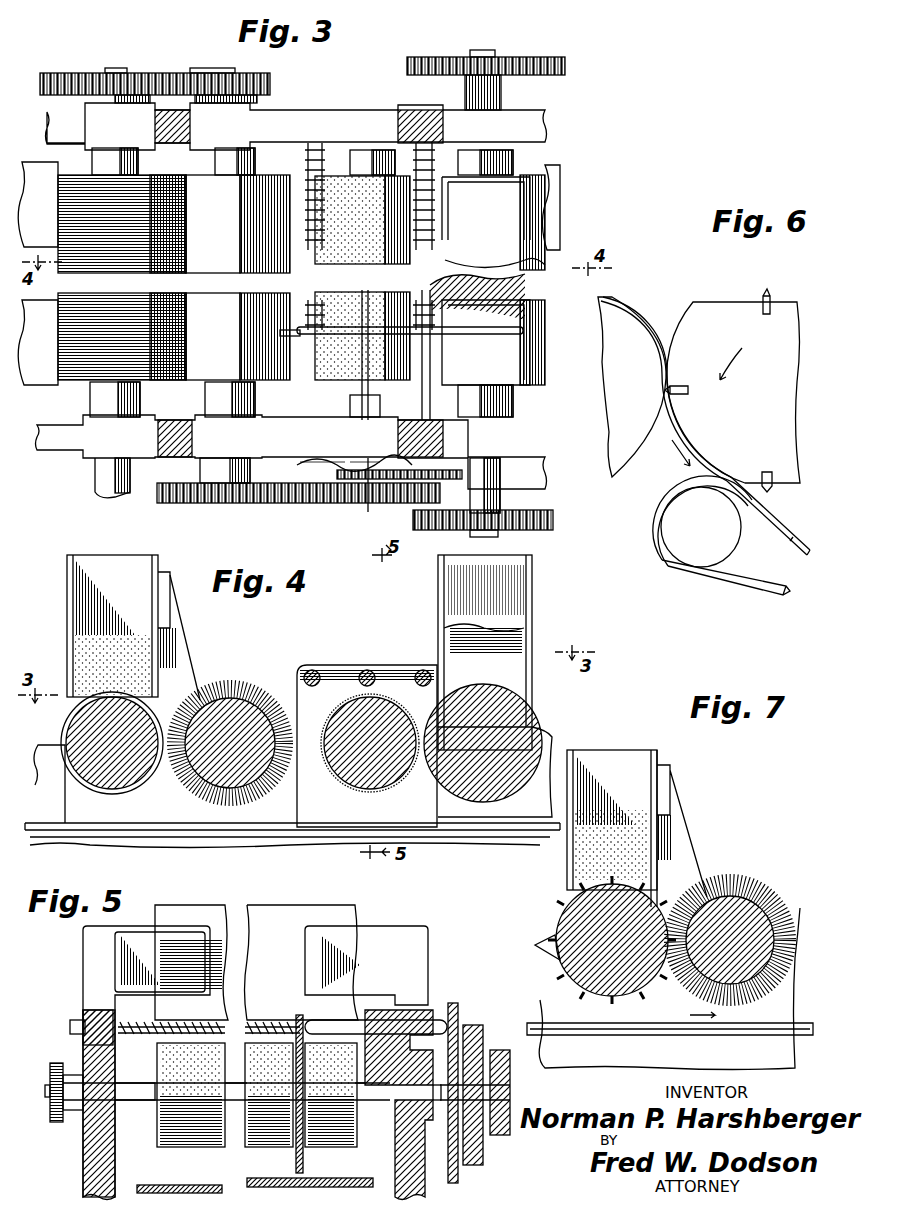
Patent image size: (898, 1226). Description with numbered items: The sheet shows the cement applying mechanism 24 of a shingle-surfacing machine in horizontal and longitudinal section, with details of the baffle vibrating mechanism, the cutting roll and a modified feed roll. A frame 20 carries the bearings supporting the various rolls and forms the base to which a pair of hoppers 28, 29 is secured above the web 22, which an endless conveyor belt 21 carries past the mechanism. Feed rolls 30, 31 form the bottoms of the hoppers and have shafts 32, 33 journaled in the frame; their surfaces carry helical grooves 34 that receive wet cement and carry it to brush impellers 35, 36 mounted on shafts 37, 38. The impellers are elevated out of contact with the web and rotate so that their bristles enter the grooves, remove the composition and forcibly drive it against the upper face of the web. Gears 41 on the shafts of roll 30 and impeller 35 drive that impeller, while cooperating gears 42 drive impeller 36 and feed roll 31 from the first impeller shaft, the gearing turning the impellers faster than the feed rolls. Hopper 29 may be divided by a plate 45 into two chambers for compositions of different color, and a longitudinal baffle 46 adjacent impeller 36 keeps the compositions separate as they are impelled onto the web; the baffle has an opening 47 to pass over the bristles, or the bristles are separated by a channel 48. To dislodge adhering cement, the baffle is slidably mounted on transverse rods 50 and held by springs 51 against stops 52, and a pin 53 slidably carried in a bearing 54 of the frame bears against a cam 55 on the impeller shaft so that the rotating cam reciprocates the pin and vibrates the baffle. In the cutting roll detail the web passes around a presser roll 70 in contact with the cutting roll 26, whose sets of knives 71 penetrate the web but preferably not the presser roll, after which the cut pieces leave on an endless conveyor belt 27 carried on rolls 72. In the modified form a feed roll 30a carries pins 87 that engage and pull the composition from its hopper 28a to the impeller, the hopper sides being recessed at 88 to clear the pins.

In FIG. 3, the frame 20 is at (290, 108).
In FIG. 4, the frame 20 is at (55, 790).
In FIG. 5, the frame 20 is at (83, 1150).
In FIG. 7, the frame 20 is at (582, 1040).
In FIG. 3, the endless conveyor belt 21 is at (555, 178).
In FIG. 4, the endless conveyor belt 21 is at (70, 835).
In FIG. 5, the endless conveyor belt 21 is at (130, 1190).
In FIG. 7, the endless conveyor belt 21 is at (625, 1040).
In FIG. 3, the web 22 is at (40, 172).
In FIG. 4, the web 22 is at (132, 835).
In FIG. 5, the web 22 is at (345, 1178).
In FIG. 6, the web 22 is at (652, 318).
In FIG. 7, the web 22 is at (665, 1040).
In FIG. 4, the cement applying mechanism 24 is at (50, 618).
In FIG. 6, the cutting roll 26 is at (727, 327).
In FIG. 6, the endless conveyor belt 27 is at (738, 578).
In FIG. 4, the hopper 28 is at (68, 568).
In FIG. 7, the hopper 28a is at (660, 757).
In FIG. 3, the hopper 29 is at (520, 215).
In FIG. 4, the hopper 29 is at (533, 568).
In FIG. 5, the hopper 29 is at (282, 912).
In FIG. 3, the feed roll 30 is at (62, 320).
In FIG. 4, the feed roll 30 is at (75, 724).
In FIG. 7, the feed roll 30a is at (560, 920).
In FIG. 3, the feed roll 31 is at (505, 195).
In FIG. 4, the feed roll 31 is at (520, 715).
In FIG. 3, the shaft 32 is at (143, 155).
In FIG. 3, the shaft 33 is at (505, 155).
In FIG. 3, the helical grooves 34 is at (60, 370).
In FIG. 4, the helical grooves 34 is at (62, 746).
In FIG. 3, the impeller 35 is at (190, 370).
In FIG. 4, the impeller 35 is at (222, 705).
In FIG. 7, the impeller 35 is at (745, 915).
In FIG. 3, the impeller 36 is at (362, 278).
In FIG. 4, the impeller 36 is at (350, 710).
In FIG. 5, the impeller 36 is at (170, 1150).
In FIG. 3, the shaft 37 is at (250, 153).
In FIG. 3, the shaft 38 is at (355, 148).
In FIG. 5, the shaft 38 is at (135, 1110).
In FIG. 3, the gears 41 is at (196, 70).
In FIG. 3, the gears 42 is at (258, 520).
In FIG. 5, the gears 42 is at (490, 1145).
In FIG. 3, the plate 45 is at (470, 290).
In FIG. 4, the plate 45 is at (500, 640).
In FIG. 3, the baffle 46 is at (385, 325).
In FIG. 4, the baffle 46 is at (325, 690).
In FIG. 5, the baffle 46 is at (303, 1160).
In FIG. 4, the opening 47 is at (340, 790).
In FIG. 5, the opening 47 is at (298, 1150).
In FIG. 3, the channel 48 is at (340, 325).
In FIG. 5, the channel 48 is at (255, 1150).
In FIG. 3, the transverse rods 50 is at (445, 135).
In FIG. 4, the transverse rods 50 is at (310, 670).
In FIG. 5, the transverse rods 50 is at (72, 1027).
In FIG. 3, the springs 51 is at (305, 300).
In FIG. 5, the springs 51 is at (118, 1010).
In FIG. 3, the stops 52 is at (300, 330).
In FIG. 3, the pin 53 is at (365, 500).
In FIG. 4, the pin 53 is at (372, 670).
In FIG. 5, the pin 53 is at (405, 1020).
In FIG. 3, the bearing 54 is at (355, 408).
In FIG. 5, the bearing 54 is at (400, 1010).
In FIG. 3, the cam 55 is at (294, 472).
In FIG. 5, the cam 55 is at (460, 1008).
In FIG. 6, the presser roll 70 is at (620, 322).
In FIG. 6, the knives 71 is at (762, 297).
In FIG. 6, the rolls 72 is at (680, 553).
In FIG. 7, the pins 87 is at (550, 955).
In FIG. 7, the recesses 88 is at (650, 895).